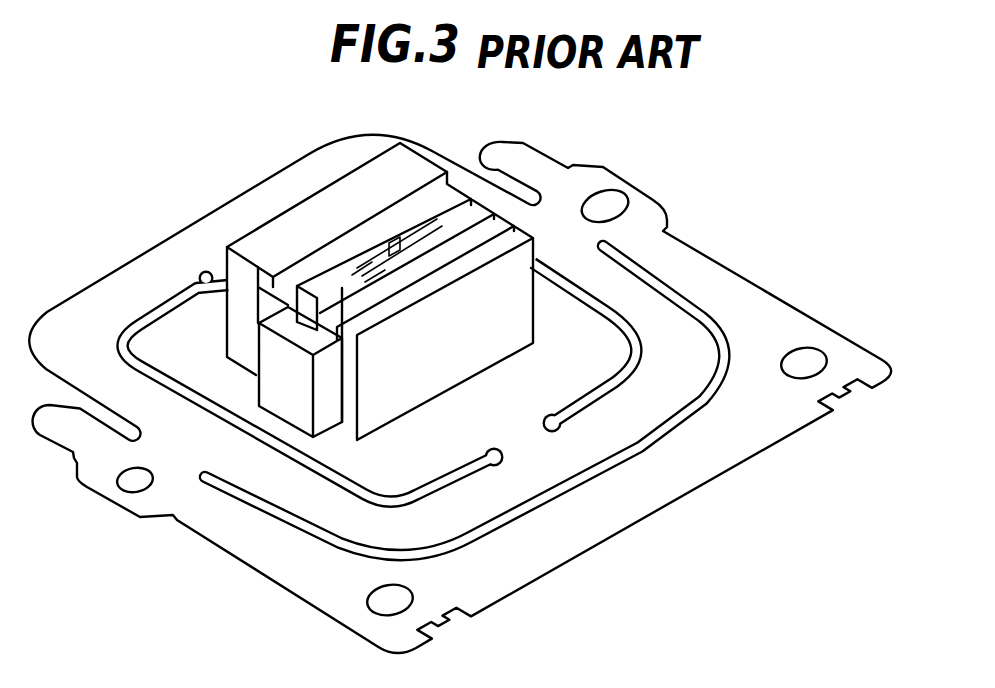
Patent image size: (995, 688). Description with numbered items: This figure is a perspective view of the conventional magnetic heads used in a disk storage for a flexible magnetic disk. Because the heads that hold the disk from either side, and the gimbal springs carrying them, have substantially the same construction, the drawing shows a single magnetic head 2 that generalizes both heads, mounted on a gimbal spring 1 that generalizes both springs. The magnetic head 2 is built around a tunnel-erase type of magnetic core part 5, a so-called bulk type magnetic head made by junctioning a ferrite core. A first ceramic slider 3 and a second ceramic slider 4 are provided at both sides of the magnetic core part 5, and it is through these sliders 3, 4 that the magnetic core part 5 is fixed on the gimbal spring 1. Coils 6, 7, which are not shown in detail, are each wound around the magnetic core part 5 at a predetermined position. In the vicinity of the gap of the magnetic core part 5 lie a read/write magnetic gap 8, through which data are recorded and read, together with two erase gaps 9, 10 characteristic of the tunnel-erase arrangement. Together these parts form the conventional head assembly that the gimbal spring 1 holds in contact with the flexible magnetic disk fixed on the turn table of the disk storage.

The gimbal spring 1 is at (722, 266).
The magnetic head 2 is at (365, 340).
The first ceramic slider 3 is at (300, 222).
The second ceramic slider 4 is at (434, 369).
The magnetic core part 5 is at (462, 206).
The coil 6 is at (248, 449).
The coil 7 is at (290, 393).
The read/write magnetic gap 8 is at (418, 233).
The erase gap 9 is at (377, 249).
The erase gap 10 is at (400, 263).